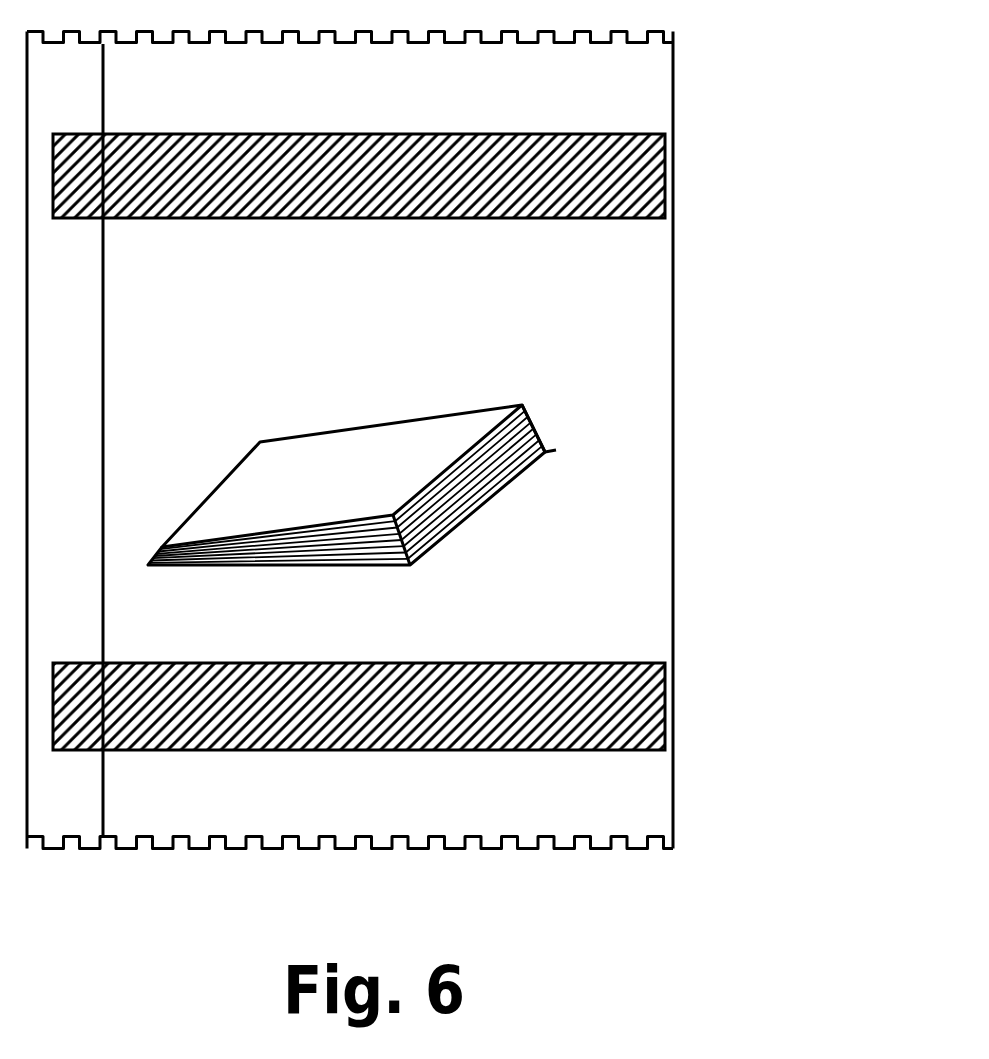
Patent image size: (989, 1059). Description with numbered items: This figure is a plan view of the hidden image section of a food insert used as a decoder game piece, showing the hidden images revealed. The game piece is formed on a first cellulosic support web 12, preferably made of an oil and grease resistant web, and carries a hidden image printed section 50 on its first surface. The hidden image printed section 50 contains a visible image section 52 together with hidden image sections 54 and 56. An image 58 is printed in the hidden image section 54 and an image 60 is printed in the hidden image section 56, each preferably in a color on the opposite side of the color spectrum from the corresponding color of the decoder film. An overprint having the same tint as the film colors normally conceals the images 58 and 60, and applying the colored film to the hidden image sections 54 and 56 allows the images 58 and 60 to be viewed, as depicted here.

The first cellulosic support web 12 is at (718, 237).
The hidden image printed section 50 is at (672, 565).
The visible image section 52 is at (570, 368).
The hidden image section 54 is at (633, 172).
The hidden image section 56 is at (637, 695).
The image 58 is at (423, 162).
The image 60 is at (380, 740).